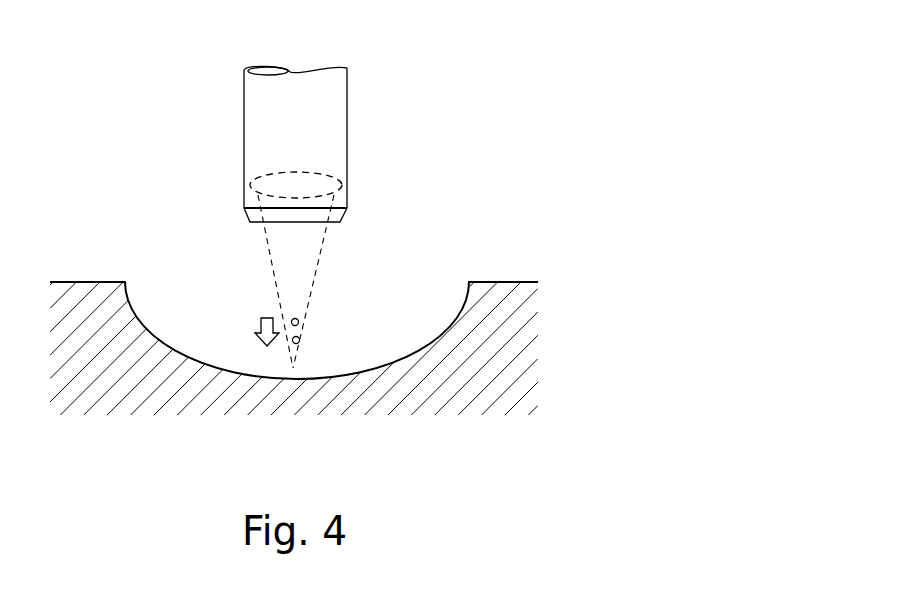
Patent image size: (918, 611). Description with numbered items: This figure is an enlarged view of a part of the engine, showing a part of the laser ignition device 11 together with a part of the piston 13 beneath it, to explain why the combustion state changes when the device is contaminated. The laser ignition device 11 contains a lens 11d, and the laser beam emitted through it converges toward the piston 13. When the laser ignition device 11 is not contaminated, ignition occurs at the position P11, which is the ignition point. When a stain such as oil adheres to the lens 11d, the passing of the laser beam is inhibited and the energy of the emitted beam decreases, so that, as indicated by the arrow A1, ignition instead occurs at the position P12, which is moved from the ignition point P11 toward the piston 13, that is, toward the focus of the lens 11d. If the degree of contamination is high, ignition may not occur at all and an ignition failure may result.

The laser ignition device 11 is at (228, 123).
The lens 11d is at (312, 172).
The piston 13 is at (510, 283).
The position P11 is at (297, 319).
The position P12 is at (299, 338).
The arrow A1 is at (245, 330).